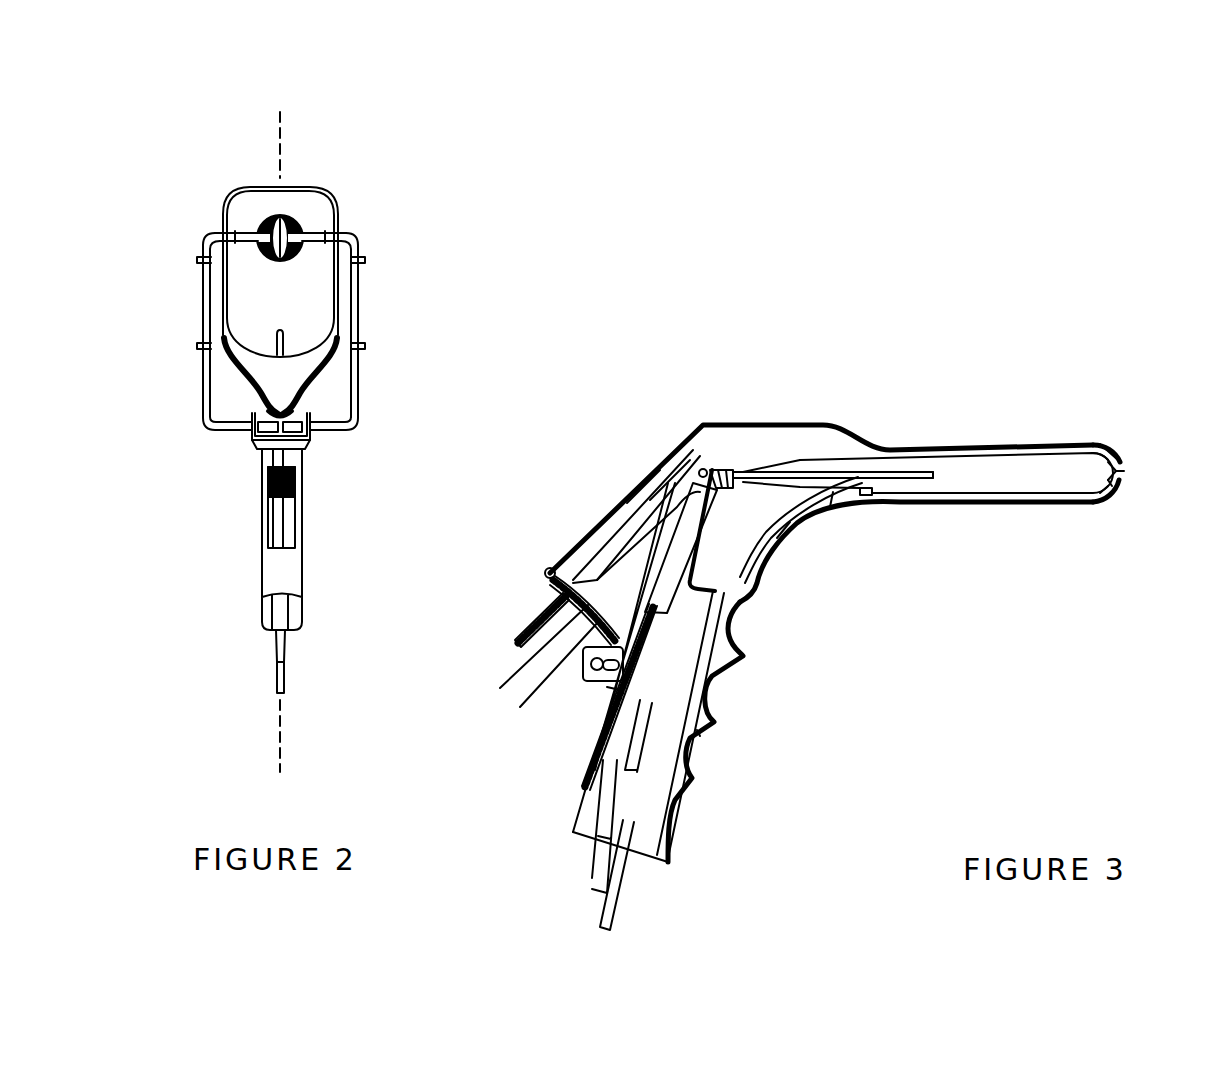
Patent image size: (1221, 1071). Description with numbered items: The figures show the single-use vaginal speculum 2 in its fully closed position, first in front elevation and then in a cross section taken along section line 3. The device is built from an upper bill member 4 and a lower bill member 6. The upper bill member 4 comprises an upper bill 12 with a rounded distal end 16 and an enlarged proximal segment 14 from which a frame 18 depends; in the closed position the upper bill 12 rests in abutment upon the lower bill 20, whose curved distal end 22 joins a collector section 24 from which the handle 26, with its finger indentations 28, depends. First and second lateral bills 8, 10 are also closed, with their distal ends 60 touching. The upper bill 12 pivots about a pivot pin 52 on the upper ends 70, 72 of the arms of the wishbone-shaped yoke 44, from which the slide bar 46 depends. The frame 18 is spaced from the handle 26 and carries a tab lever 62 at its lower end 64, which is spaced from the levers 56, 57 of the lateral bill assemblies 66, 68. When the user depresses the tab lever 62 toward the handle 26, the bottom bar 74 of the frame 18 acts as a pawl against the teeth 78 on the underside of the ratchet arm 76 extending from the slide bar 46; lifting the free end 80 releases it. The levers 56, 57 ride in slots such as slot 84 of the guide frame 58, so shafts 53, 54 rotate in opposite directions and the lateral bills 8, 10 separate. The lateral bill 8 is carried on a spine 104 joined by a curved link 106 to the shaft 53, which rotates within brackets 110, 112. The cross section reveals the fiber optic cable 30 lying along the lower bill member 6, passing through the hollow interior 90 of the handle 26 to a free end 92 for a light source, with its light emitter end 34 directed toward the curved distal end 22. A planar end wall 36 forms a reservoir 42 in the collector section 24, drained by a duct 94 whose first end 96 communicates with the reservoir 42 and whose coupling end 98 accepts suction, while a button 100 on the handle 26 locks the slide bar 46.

In FIG. 2, the vaginal speculum 2 is at (397, 165).
In FIG. 3, the vaginal speculum 2 is at (920, 385).
In FIG. 2, the section line 3 is at (280, 110).
In FIG. 2, the upper bill member 4 is at (320, 190).
In FIG. 3, the upper bill member 4 is at (963, 438).
In FIG. 3, the lower bill member 6 is at (950, 505).
In FIG. 2, the first lateral bill 8 is at (260, 223).
In FIG. 3, the first lateral bill 8 is at (1108, 457).
In FIG. 2, the second lateral bill 10 is at (297, 220).
In FIG. 3, the upper bill 12 is at (1053, 443).
In FIG. 3, the enlarged proximal segment 14 is at (752, 477).
In FIG. 3, the rounded distal end 16 is at (1098, 443).
In FIG. 2, the frame 18 is at (352, 280).
In FIG. 3, the frame 18 is at (627, 503).
In FIG. 3, the lower bill 20 is at (1010, 507).
In FIG. 3, the curved distal end 22 is at (1108, 493).
In FIG. 3, the collector section 24 is at (827, 507).
In FIG. 2, the handle 26 is at (302, 523).
In FIG. 3, the handle 26 is at (737, 652).
In FIG. 3, the finger indentations 28 is at (710, 680).
In FIG. 2, the fiber optic cable 30 is at (283, 677).
In FIG. 3, the fiber optic cable 30 is at (730, 623).
In FIG. 3, the light emitter end 34 is at (866, 498).
In FIG. 3, the planar end wall 36 is at (680, 548).
In FIG. 3, the reservoir 42 is at (773, 508).
In FIG. 3, the yoke 44 is at (673, 560).
In FIG. 2, the slide bar 46 is at (283, 535).
In FIG. 3, the slide bar 46 is at (600, 713).
In FIG. 3, the pivot pin 52 is at (700, 475).
In FIG. 2, the shaft 53 is at (205, 303).
In FIG. 2, the shaft 54 is at (358, 300).
In FIG. 2, the lever 56 is at (323, 430).
In FIG. 2, the lever 57 is at (237, 430).
In FIG. 3, the lever 57 is at (607, 687).
In FIG. 2, the guide frame 58 is at (307, 450).
In FIG. 3, the guide frame 58 is at (587, 672).
In FIG. 3, the distal ends 60 is at (1118, 487).
In FIG. 2, the tab lever 62 is at (278, 398).
In FIG. 3, the tab lever 62 is at (520, 617).
In FIG. 2, the lower end 64 is at (303, 367).
In FIG. 2, the lateral bill assembly 66 is at (358, 400).
In FIG. 2, the lateral bill assembly 68 is at (203, 403).
In FIG. 3, the lateral bill assembly 68 is at (777, 467).
In FIG. 2, the upper end 70 is at (343, 227).
In FIG. 2, the upper end 72 is at (218, 230).
In FIG. 3, the bottom bar 74 is at (550, 603).
In FIG. 2, the ratchet arm 76 is at (275, 337).
In FIG. 3, the ratchet arm 76 is at (523, 663).
In FIG. 3, the teeth 78 is at (583, 668).
In FIG. 3, the free end 80 is at (550, 570).
In FIG. 3, the slot 84 is at (610, 692).
In FIG. 3, the hollow interior 90 is at (683, 812).
In FIG. 3, the free end 92 is at (613, 910).
In FIG. 2, the duct 94 is at (282, 637).
In FIG. 3, the duct 94 is at (697, 730).
In FIG. 3, the first end 96 is at (733, 608).
In FIG. 3, the coupling end 98 is at (600, 880).
In FIG. 2, the button 100 is at (267, 502).
In FIG. 3, the button 100 is at (600, 700).
In FIG. 3, the spine 104 is at (727, 478).
In FIG. 3, the curved link 106 is at (723, 478).
In FIG. 2, the bracket 110 is at (198, 257).
In FIG. 2, the bracket 112 is at (198, 345).